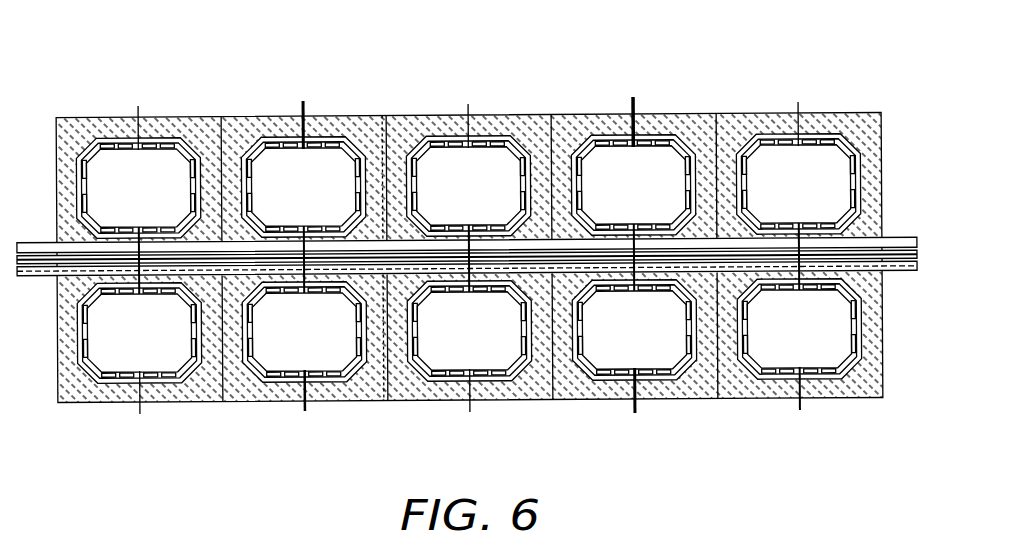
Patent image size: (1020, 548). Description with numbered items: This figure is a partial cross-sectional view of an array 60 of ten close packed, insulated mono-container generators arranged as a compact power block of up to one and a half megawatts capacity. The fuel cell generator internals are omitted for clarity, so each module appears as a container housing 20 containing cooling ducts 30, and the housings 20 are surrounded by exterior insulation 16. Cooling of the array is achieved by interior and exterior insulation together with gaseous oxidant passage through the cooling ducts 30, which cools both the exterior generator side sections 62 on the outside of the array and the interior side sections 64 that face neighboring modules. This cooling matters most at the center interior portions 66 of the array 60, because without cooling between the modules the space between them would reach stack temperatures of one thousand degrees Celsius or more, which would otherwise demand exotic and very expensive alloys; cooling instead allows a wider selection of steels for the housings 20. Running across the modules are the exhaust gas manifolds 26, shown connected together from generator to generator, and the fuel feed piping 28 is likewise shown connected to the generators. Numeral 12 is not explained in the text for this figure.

The generator chamber 12 is at (469, 223).
The exterior insulation 16 is at (63, 150).
The housings 20 is at (472, 258).
The exhaust gas manifolds 26 is at (33, 240).
The fuel feed piping 28 is at (140, 106).
The cooling ducts 30 is at (119, 140).
The array 60 is at (467, 255).
The exterior generator side sections 62 is at (765, 133).
The interior side sections 64 is at (799, 286).
The center interior portions 66 is at (392, 238).